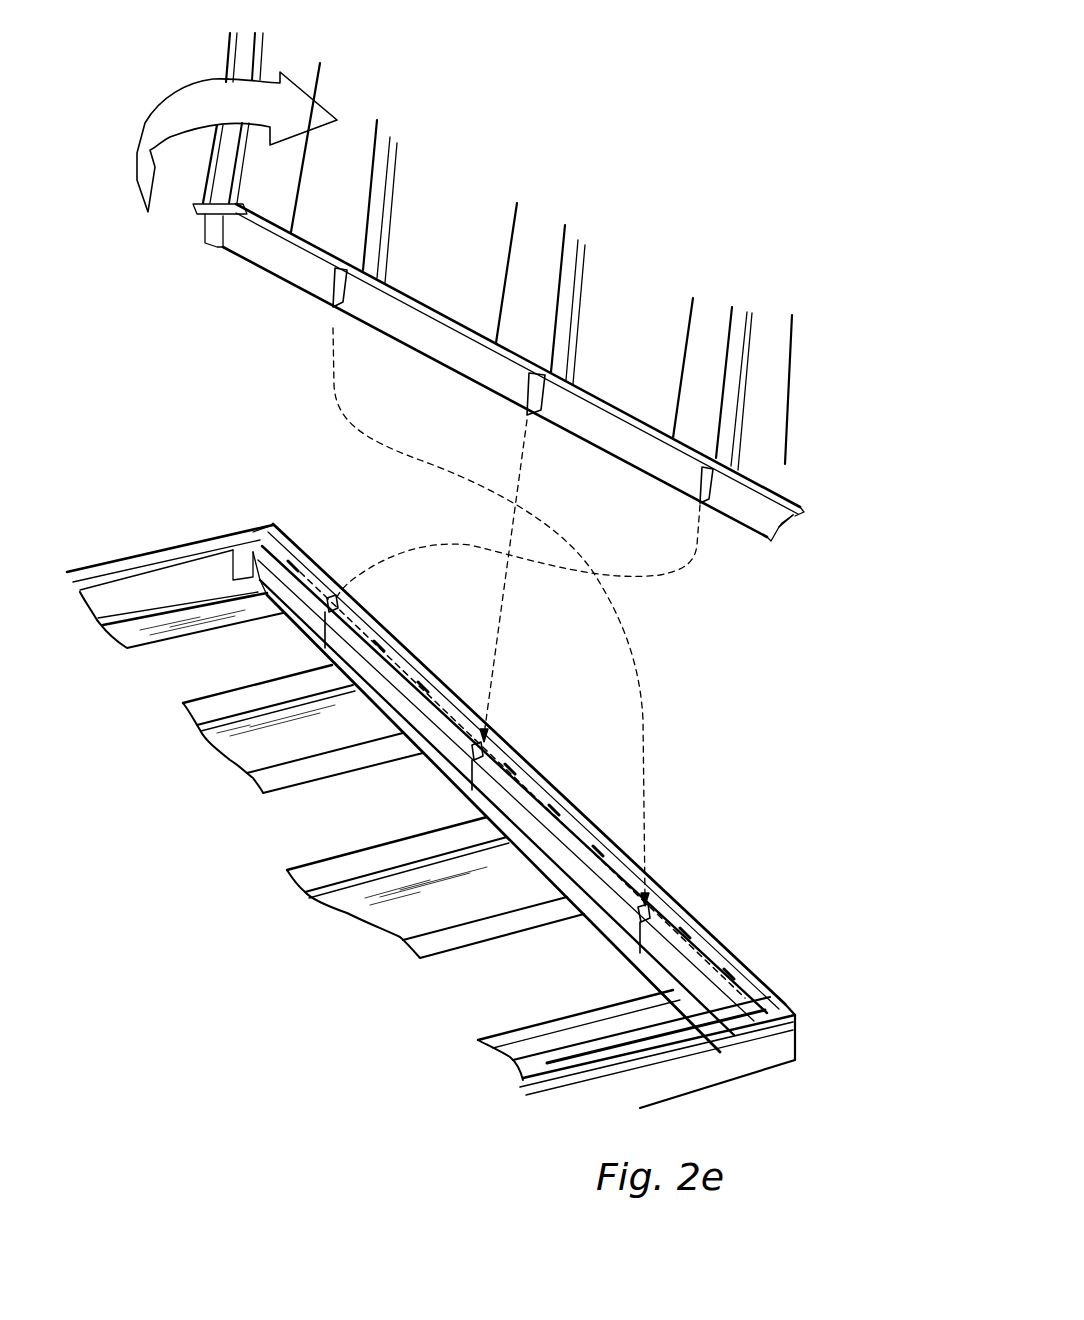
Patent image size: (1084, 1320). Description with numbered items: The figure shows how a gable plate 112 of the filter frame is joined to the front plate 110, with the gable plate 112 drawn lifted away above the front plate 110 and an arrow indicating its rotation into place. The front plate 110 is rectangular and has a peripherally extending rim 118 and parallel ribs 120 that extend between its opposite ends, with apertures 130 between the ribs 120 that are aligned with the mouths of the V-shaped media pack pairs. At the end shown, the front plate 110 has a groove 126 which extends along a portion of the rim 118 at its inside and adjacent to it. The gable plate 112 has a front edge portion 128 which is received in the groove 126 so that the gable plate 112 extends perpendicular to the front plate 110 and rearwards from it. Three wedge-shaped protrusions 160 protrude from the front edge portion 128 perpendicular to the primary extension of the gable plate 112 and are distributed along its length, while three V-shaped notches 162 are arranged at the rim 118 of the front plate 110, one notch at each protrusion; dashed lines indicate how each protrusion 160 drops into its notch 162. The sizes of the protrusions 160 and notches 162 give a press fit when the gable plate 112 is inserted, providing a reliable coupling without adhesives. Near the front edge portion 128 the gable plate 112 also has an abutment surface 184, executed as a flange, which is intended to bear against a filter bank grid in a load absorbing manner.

The front plate 110 is at (184, 558).
The gable plate 112 is at (764, 355).
The rim 118 is at (721, 971).
The ribs 120 is at (374, 722).
The groove 126 is at (548, 858).
The front edge portion 128 is at (263, 268).
The apertures 130 is at (284, 658).
The protrusions 160 is at (334, 305).
The notches 162 is at (340, 605).
The abutment surface 184 is at (793, 508).